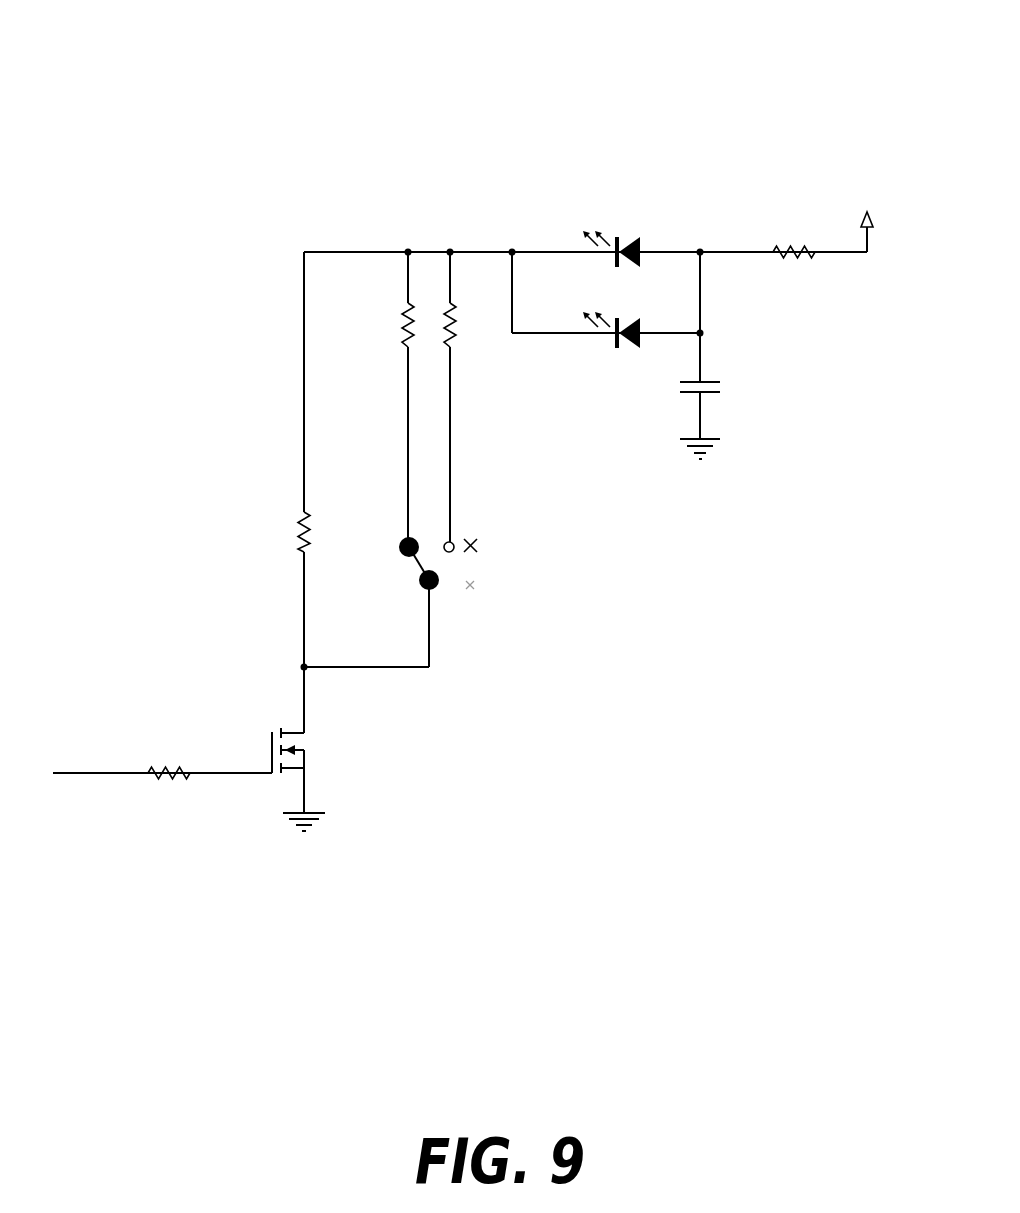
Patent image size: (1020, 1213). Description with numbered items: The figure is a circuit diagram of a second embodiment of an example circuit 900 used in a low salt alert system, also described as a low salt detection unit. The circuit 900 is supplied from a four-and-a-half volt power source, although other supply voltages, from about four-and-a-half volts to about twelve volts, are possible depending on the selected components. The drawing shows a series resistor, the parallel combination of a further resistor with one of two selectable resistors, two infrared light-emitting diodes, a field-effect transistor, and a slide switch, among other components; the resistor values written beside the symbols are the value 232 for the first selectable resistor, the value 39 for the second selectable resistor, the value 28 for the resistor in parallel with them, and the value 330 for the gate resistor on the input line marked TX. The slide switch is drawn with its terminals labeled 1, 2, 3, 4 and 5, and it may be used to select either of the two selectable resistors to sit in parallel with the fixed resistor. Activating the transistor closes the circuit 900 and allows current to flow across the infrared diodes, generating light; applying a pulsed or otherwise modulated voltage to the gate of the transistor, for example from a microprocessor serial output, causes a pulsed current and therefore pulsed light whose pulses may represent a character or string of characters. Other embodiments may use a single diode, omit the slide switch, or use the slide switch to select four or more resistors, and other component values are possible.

The circuit 900 is at (804, 102).
The slide switch pin 1 is at (414, 545).
The slide switch pin 2 is at (375, 618).
The slide switch pin 3 is at (455, 531).
The slide switch pin 4 is at (476, 600).
The slide switch pin 5 is at (475, 531).
The resistor R11 value 232 is at (383, 321).
The resistor R12 value 39 is at (472, 321).
The resistor R16 value 28 is at (280, 528).
The resistor R18 value 330 is at (169, 771).